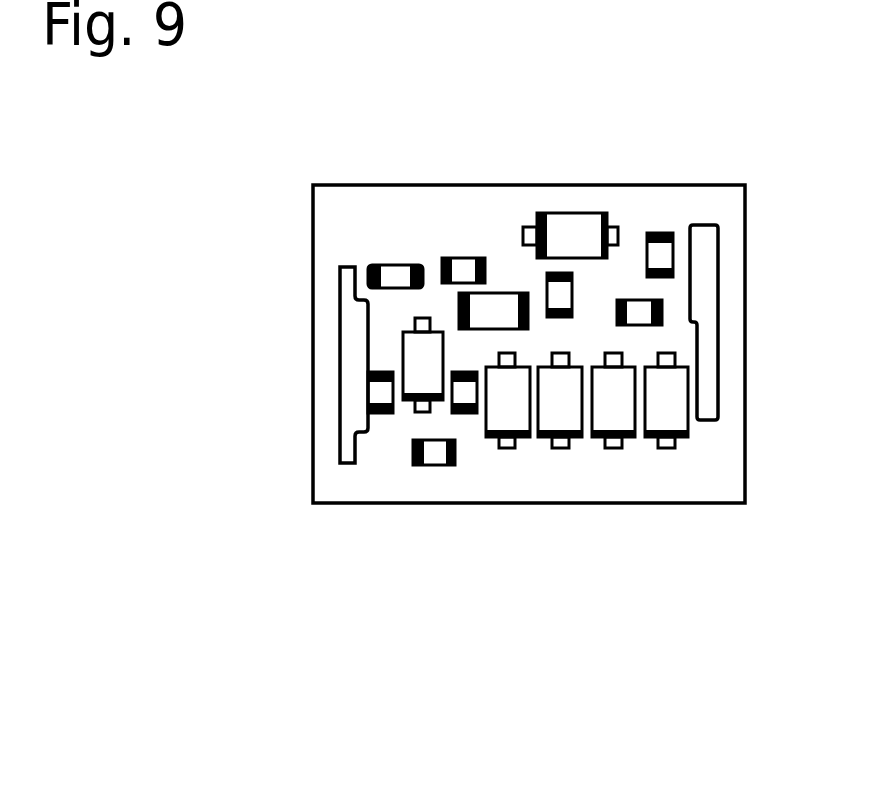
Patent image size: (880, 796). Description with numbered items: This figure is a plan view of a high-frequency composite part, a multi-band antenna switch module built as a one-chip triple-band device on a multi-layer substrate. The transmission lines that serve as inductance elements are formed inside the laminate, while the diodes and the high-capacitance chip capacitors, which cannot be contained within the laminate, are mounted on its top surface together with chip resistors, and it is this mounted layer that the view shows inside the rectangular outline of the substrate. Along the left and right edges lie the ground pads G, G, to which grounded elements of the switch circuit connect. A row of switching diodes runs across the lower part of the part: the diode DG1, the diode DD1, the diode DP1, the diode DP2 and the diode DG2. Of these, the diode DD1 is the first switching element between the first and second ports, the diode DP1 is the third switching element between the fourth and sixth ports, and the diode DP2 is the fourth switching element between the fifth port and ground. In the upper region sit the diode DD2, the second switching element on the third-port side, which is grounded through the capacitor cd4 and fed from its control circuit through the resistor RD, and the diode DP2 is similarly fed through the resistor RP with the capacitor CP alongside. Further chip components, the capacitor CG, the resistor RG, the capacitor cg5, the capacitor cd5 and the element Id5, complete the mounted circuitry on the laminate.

The capacitor CG is at (393, 266).
The resistor RG is at (458, 258).
The inductor Id5 is at (491, 293).
The capacitor CP is at (548, 288).
The diode DD2 is at (585, 213).
The resistor RP is at (630, 300).
The resistor RD is at (665, 233).
The ground G is at (345, 323).
The capacitor cg5 is at (368, 395).
The diode DG1 is at (413, 402).
The capacitor cd4 is at (433, 465).
The capacitor cd5 is at (463, 413).
The diode DD1 is at (513, 448).
The diode DP1 is at (565, 448).
The diode DP2 is at (618, 448).
The diode DG2 is at (680, 448).